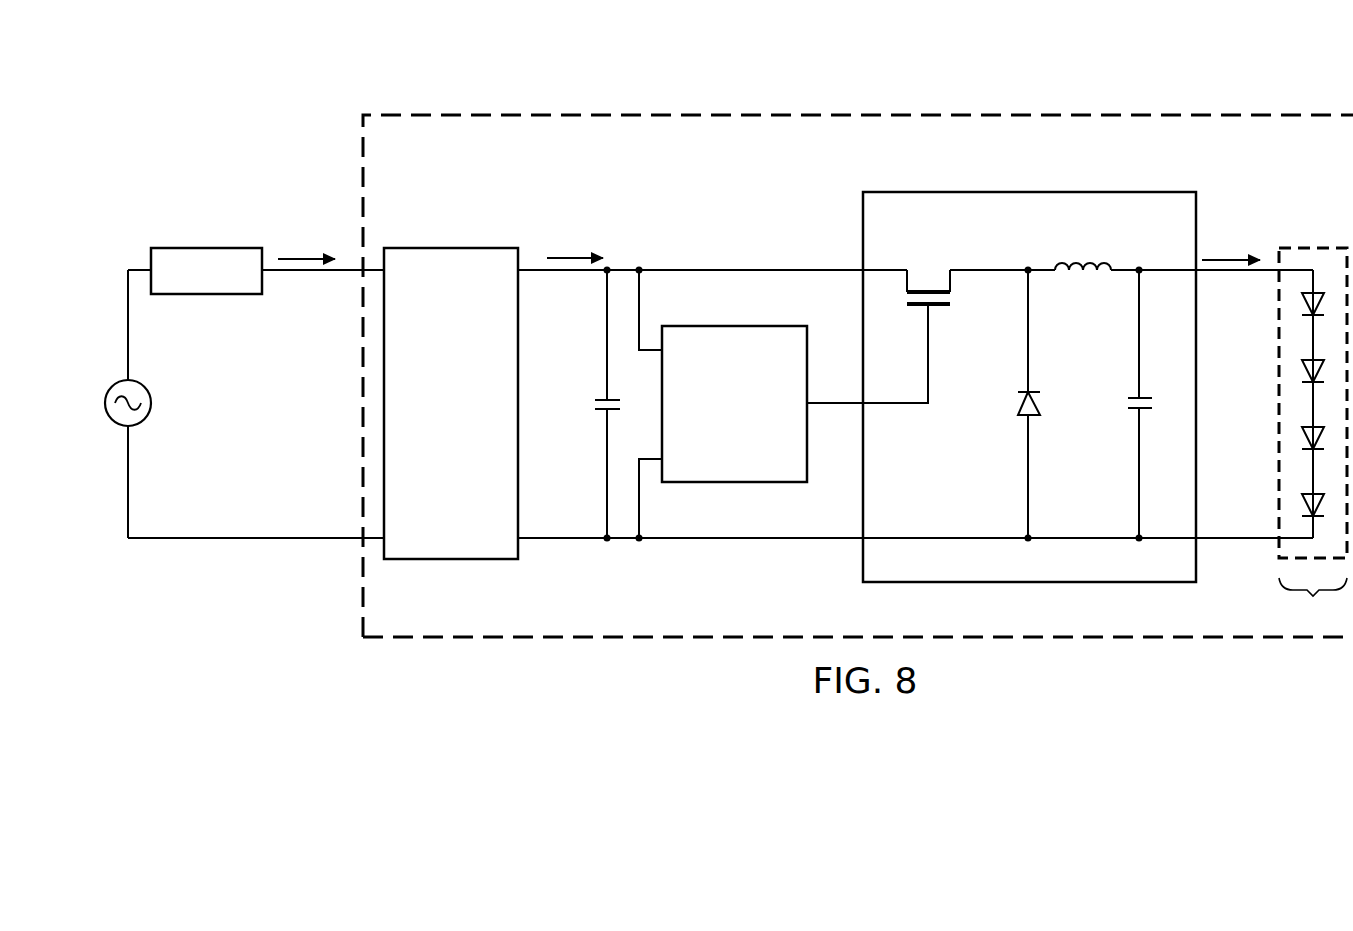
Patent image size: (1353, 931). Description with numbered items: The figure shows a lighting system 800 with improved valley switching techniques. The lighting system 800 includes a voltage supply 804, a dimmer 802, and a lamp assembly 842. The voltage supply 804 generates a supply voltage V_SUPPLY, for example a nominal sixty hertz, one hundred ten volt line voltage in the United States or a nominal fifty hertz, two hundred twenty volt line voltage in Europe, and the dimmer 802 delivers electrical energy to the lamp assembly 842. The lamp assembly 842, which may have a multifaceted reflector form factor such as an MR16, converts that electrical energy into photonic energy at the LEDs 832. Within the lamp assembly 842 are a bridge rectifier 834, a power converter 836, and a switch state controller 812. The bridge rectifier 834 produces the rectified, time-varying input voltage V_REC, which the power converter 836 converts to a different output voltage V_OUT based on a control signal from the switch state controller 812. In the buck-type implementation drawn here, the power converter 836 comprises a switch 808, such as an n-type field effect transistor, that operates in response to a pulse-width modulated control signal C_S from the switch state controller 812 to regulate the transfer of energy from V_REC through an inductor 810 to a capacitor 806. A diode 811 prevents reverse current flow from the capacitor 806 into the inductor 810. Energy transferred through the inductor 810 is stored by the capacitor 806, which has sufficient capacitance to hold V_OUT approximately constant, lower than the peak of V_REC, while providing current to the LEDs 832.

The lighting system 800 is at (668, 78).
The dimmer 802 is at (206, 247).
The voltage supply 804 is at (109, 389).
The capacitor 806 is at (1126, 403).
The switch 808 is at (944, 307).
The inductor 810 is at (1096, 259).
The diode 811 is at (1016, 407).
The switch state controller 812 is at (713, 437).
The LEDs 832 is at (1312, 246).
The bridge rectifier 834 is at (430, 450).
The power converter 836 is at (1130, 190).
The lamp assembly 842 is at (1130, 113).